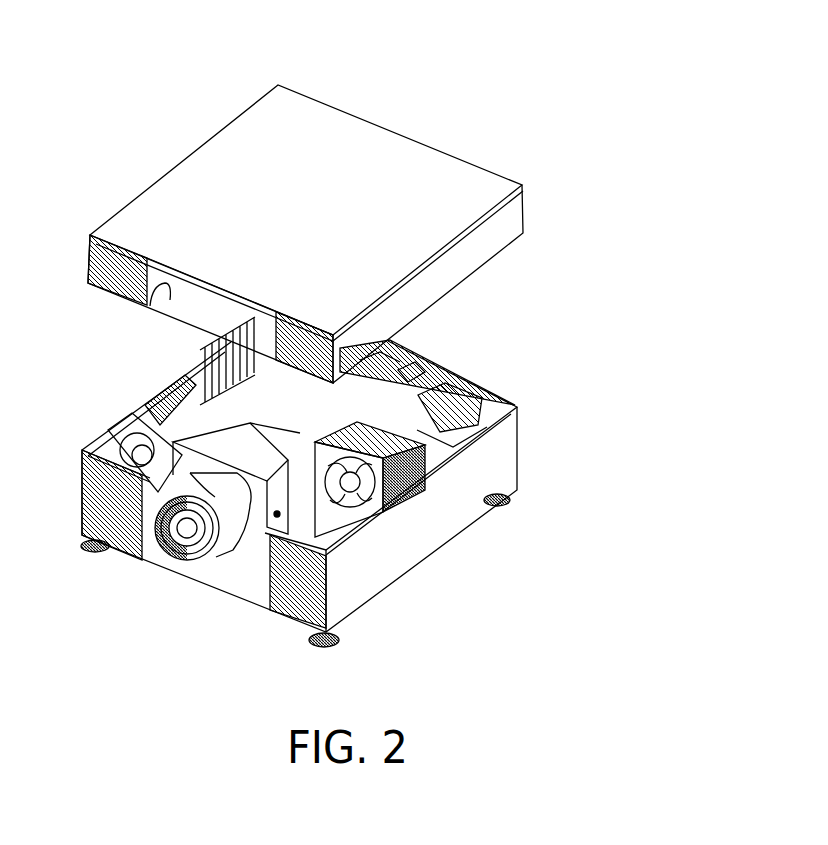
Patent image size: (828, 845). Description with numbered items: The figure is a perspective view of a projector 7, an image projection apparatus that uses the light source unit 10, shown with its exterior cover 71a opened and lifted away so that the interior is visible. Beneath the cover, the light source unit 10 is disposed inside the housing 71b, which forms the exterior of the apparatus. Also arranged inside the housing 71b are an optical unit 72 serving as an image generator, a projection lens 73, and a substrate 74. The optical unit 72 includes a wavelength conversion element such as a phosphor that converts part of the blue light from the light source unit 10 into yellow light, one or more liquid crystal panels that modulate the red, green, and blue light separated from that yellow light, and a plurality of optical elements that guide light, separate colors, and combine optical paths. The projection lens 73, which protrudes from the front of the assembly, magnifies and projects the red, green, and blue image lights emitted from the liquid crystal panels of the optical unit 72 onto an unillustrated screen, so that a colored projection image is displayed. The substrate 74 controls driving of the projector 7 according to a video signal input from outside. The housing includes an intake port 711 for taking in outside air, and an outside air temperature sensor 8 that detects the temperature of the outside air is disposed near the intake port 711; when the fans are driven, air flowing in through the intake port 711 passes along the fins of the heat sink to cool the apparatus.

The projector 7 is at (152, 128).
The exterior cover 71a is at (478, 252).
The housing 71b is at (478, 486).
The intake port 711 is at (300, 585).
The optical unit 72 is at (263, 442).
The projection lens 73 is at (185, 530).
The substrate 74 is at (433, 423).
The outside air temperature sensor 8 is at (277, 515).
The light source unit 10 is at (383, 487).